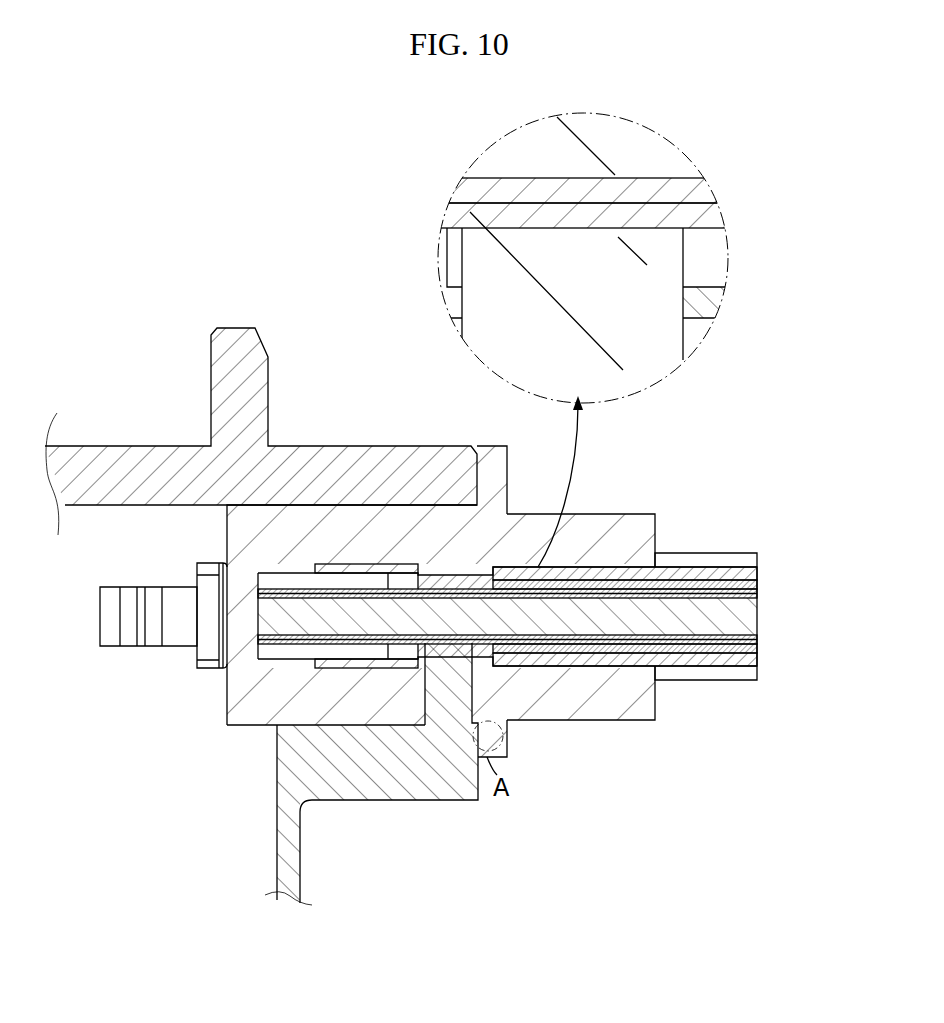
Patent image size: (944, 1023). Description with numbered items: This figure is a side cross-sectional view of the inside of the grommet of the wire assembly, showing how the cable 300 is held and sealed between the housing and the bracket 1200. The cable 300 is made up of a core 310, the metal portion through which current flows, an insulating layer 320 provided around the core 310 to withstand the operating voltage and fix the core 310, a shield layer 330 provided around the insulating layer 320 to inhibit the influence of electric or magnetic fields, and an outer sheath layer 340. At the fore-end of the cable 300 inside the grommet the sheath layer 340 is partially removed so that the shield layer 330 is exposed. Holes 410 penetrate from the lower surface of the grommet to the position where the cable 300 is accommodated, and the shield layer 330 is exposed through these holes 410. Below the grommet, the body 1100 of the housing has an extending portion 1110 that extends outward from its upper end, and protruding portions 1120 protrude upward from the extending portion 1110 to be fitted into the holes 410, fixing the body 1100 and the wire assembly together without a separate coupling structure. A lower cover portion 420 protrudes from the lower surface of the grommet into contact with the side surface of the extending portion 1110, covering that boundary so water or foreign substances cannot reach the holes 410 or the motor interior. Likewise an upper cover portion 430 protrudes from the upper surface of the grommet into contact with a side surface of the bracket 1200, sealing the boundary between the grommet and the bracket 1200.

The cable 300 is at (828, 551).
The core 310 is at (752, 617).
The insulating layer 320 is at (757, 592).
The shield layer 330 is at (757, 586).
The sheath layer 340 is at (757, 573).
The holes 410 is at (472, 683).
The lower cover portion 420 is at (503, 738).
The upper cover portion 430 is at (486, 447).
The body 1100 is at (299, 868).
The extending portion 1110 is at (462, 788).
The protruding portions 1120 is at (443, 695).
The bracket 1200 is at (352, 460).